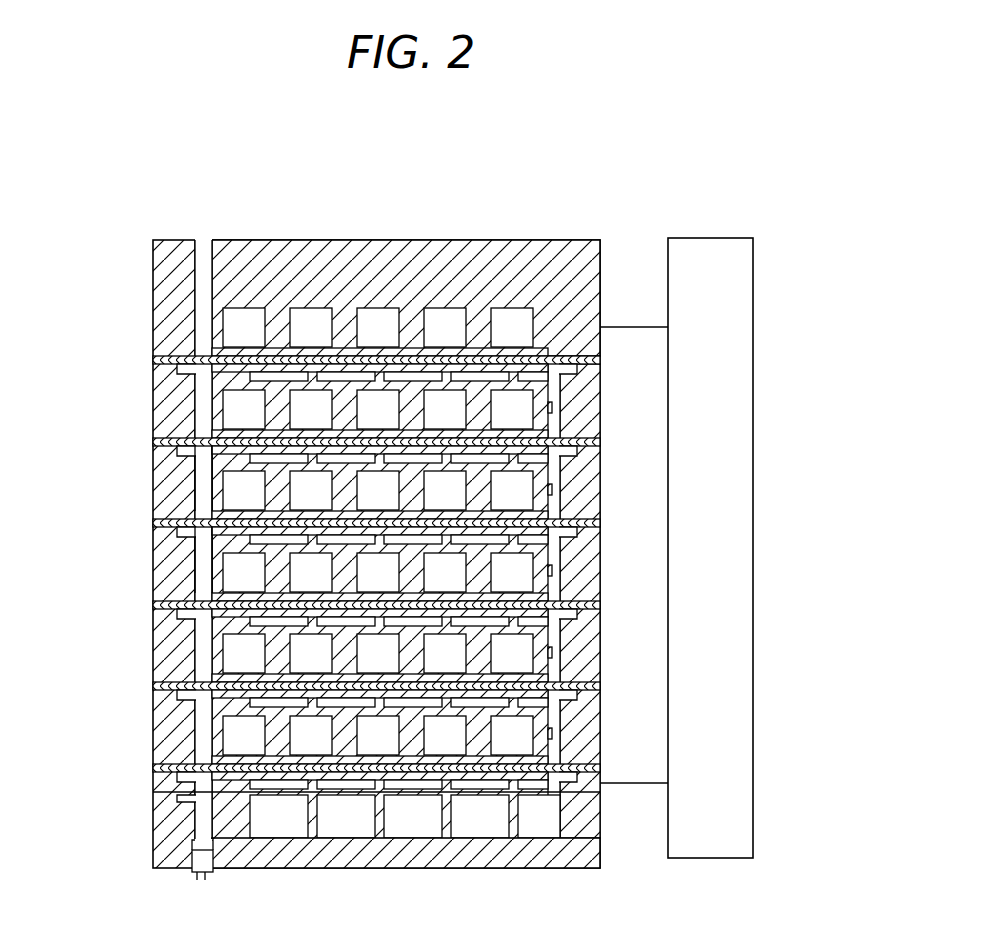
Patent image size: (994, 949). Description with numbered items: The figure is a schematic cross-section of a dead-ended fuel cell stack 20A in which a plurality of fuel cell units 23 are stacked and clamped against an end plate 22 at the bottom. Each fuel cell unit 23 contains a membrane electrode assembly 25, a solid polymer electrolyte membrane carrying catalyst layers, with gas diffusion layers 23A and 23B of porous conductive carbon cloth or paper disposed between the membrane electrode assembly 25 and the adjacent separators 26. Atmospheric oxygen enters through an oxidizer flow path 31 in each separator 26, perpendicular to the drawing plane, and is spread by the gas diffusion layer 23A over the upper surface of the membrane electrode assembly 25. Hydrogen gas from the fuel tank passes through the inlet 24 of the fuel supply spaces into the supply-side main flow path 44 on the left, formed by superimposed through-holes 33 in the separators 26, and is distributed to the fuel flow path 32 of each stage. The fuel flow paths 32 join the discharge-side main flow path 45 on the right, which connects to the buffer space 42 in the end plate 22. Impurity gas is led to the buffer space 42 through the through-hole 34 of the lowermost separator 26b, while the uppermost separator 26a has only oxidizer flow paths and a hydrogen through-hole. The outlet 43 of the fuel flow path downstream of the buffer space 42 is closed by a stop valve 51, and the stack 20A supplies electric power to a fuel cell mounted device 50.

The fuel cell stack 20A is at (363, 530).
The end plate 22 is at (532, 855).
The fuel cell unit 23 is at (353, 534).
The gas diffusion layer 23A is at (222, 352).
The gas diffusion layer 23B is at (218, 372).
The inlet of the fuel supply spaces 24 is at (199, 255).
The membrane electrode assembly 25 is at (157, 358).
The separator 26 is at (587, 401).
The separator 26a is at (603, 318).
The separator 26b is at (468, 790).
The oxidizer flow path 31 is at (235, 326).
The fuel flow path 32 is at (235, 380).
The through-hole 33 is at (204, 503).
The through-hole 34 is at (556, 497).
The buffer space 42 is at (348, 820).
The outlet of the fuel flow path 43 is at (205, 876).
The supply-side main flow path 44 is at (202, 470).
The discharge-side main flow path 45 is at (554, 551).
The fuel cell mounted device 50 is at (737, 238).
The stop valve 51 is at (197, 880).